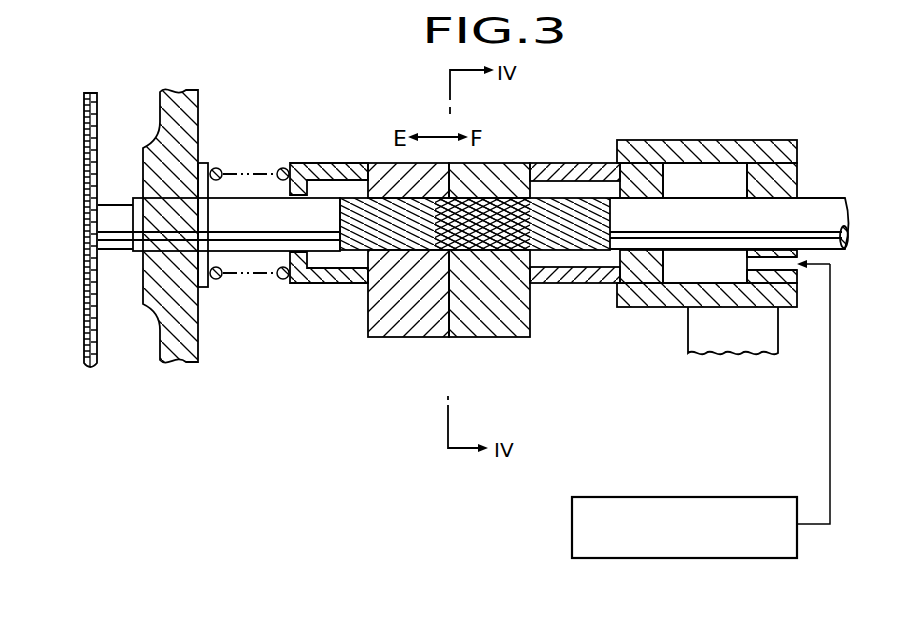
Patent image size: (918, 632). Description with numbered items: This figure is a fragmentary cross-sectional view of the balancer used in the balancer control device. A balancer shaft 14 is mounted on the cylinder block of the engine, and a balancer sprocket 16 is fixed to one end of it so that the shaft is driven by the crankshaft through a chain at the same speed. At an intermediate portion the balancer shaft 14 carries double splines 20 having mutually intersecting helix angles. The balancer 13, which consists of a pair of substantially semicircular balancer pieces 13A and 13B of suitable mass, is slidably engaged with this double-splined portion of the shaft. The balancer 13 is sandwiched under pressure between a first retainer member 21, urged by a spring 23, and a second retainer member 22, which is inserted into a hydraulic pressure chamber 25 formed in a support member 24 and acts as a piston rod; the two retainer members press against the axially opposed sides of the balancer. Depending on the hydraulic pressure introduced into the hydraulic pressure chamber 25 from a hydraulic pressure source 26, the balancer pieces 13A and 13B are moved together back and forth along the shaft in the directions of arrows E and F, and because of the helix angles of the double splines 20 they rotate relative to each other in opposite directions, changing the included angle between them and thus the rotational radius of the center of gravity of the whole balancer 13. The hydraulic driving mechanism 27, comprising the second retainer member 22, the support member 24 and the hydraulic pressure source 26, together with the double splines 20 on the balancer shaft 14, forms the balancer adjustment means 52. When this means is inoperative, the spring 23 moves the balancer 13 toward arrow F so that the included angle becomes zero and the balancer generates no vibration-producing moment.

The balancer 13 is at (460, 295).
The balancer piece 13A is at (428, 338).
The balancer piece 13B is at (453, 381).
The balancer shaft 14 is at (807, 215).
The balancer sprocket 16 is at (100, 352).
The double splines 20 is at (503, 197).
The first retainer member 21 is at (348, 283).
The second retainer member 22 is at (590, 283).
The spring 23 is at (283, 280).
The support member 24 is at (741, 308).
The hydraulic pressure chamber 25 is at (690, 272).
The hydraulic pressure source 26 is at (632, 558).
The hydraulic driving mechanism 27 is at (632, 322).
The balancer adjustment means 52 is at (770, 380).